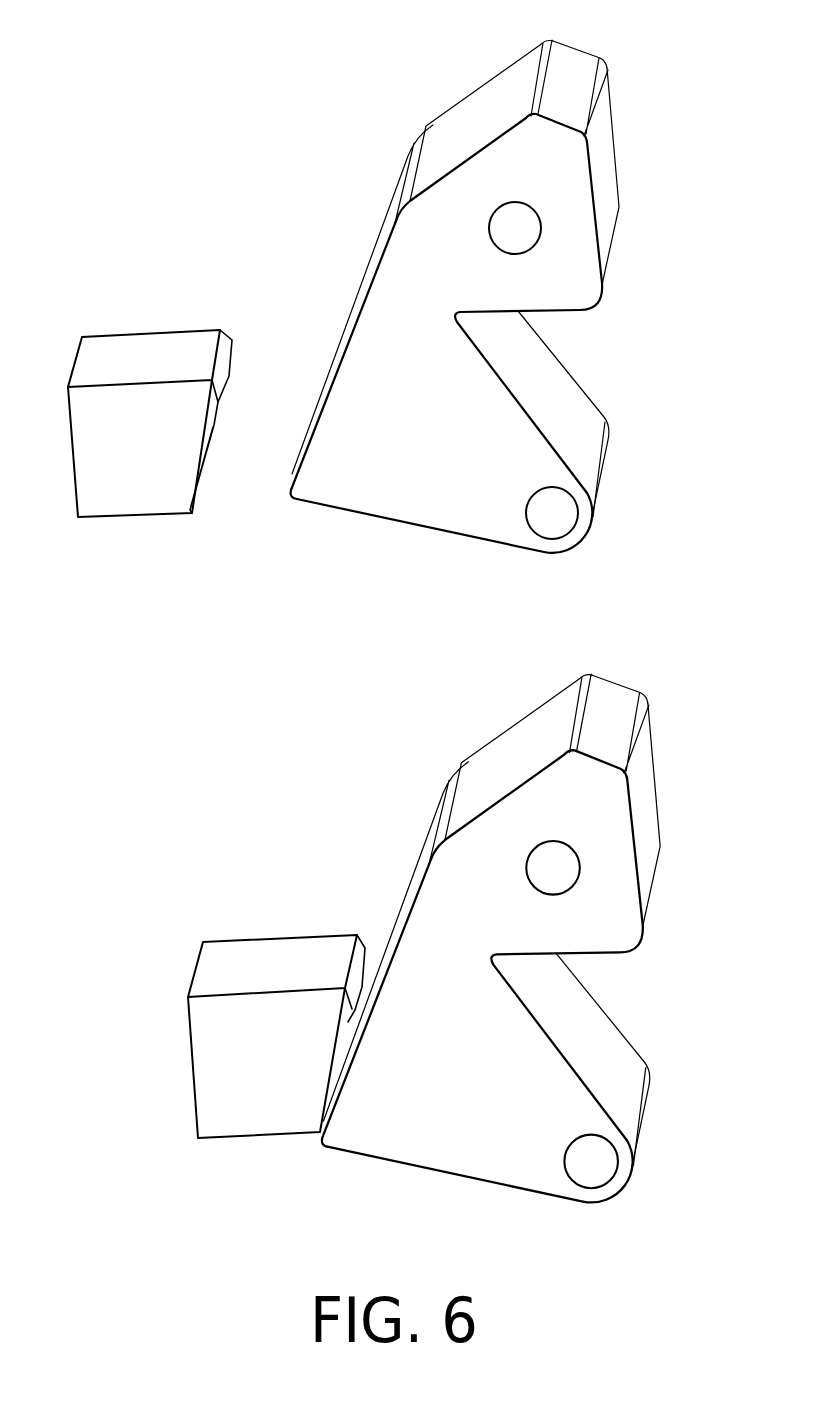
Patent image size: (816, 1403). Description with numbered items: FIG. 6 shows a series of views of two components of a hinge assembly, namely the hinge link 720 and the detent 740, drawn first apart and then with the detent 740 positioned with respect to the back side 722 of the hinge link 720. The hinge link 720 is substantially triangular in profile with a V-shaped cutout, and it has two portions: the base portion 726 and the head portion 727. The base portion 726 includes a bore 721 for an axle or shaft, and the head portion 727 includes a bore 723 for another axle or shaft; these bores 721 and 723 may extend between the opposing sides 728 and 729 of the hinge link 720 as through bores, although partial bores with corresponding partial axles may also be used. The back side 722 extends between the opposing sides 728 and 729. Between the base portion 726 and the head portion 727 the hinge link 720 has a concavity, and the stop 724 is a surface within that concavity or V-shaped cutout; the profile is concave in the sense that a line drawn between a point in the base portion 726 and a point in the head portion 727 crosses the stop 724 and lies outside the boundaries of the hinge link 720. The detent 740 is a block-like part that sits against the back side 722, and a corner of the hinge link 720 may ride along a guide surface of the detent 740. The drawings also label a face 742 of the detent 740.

The hinge link 720 is at (481, 440).
The bore 721 is at (532, 824).
The back side 722 is at (367, 623).
The bore 723 is at (500, 565).
The stop 724 is at (595, 740).
The base portion 726 is at (666, 797).
The head portion 727 is at (635, 391).
The side 728 is at (465, 658).
The side 729 is at (672, 497).
The detent 740 is at (192, 719).
The block side face 742 is at (265, 654).